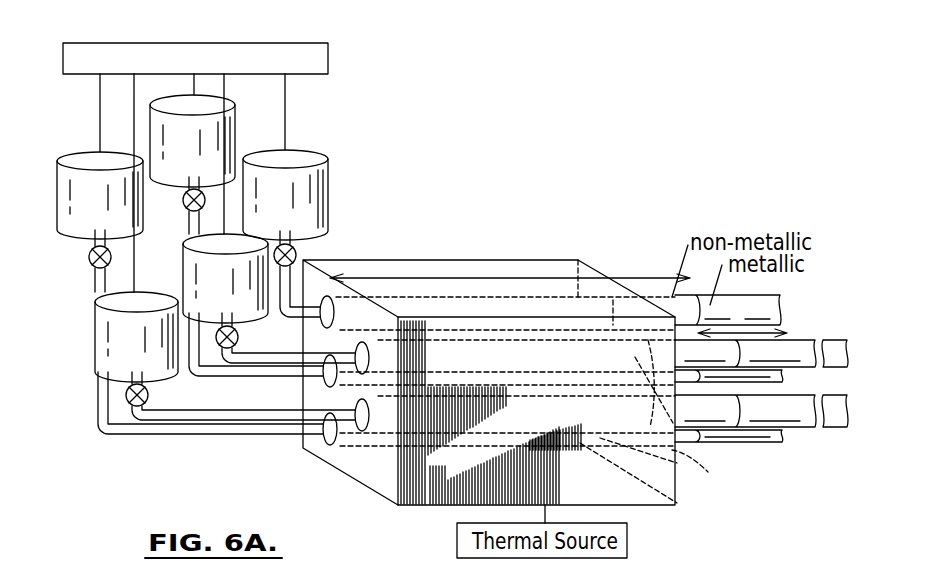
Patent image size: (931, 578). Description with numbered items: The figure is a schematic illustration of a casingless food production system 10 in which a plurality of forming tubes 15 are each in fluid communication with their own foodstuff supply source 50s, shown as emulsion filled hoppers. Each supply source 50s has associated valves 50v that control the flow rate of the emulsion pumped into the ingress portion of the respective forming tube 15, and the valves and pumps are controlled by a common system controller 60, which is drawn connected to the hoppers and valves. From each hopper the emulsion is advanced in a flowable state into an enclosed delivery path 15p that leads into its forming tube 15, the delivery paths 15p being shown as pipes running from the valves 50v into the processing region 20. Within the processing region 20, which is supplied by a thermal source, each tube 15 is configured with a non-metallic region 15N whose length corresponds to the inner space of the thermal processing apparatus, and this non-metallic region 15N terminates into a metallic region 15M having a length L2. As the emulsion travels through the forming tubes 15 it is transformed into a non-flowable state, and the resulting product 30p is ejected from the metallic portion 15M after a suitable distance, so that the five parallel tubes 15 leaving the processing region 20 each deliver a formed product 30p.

The system controller 60 is at (122, 43).
The supply source 50s is at (73, 157).
The valves 50v is at (88, 257).
The enclosed delivery path 15p is at (292, 270).
The processing region 20 is at (466, 242).
The non-metallic region 15N is at (482, 303).
The casingless food production system 10 is at (564, 128).
The metallic region 15M is at (757, 308).
The forming tube 15 is at (690, 470).
The non-flowable state product 30p is at (831, 340).
The length of metallic region L2 is at (781, 321).